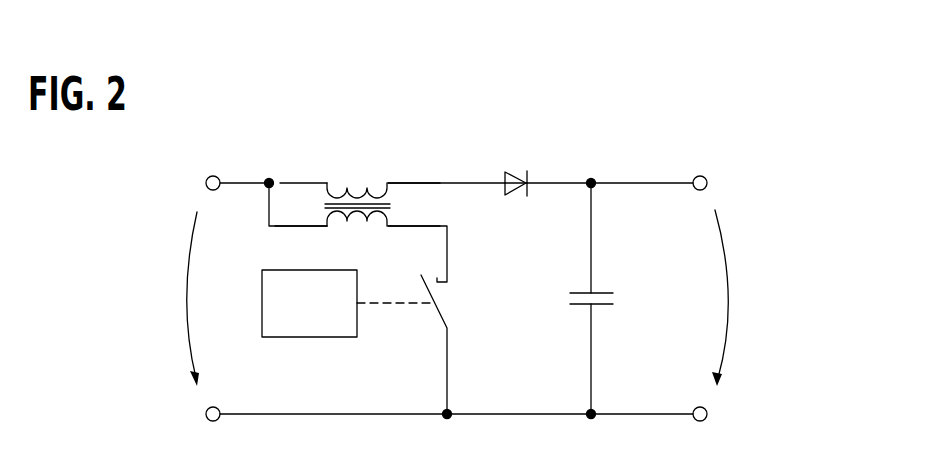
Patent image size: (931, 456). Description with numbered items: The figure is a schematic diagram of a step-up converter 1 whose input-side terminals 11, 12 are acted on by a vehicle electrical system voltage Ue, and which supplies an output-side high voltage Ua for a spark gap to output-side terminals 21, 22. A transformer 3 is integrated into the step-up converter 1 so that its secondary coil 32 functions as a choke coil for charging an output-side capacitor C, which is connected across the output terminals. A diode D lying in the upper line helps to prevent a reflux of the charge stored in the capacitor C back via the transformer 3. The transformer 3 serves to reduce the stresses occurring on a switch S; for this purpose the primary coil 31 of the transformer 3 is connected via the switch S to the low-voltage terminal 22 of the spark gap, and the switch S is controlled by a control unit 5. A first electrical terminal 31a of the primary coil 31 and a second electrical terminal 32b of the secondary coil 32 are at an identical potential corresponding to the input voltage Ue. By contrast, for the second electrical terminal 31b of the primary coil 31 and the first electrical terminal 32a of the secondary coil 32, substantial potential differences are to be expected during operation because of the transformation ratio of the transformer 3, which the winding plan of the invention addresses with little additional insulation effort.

The step-up converter 1 is at (672, 68).
The transformer 3 is at (380, 148).
The control unit 5 is at (310, 316).
The input-side terminal 11 is at (206, 183).
The input-side terminal 12 is at (206, 414).
The output-side terminal 21 is at (707, 183).
The output-side terminal 22 is at (707, 414).
The primary coil 31 is at (365, 218).
The first electrical terminal of primary coil 31a is at (313, 227).
The second electrical terminal of primary coil 31b is at (405, 227).
The secondary coil 32 is at (350, 194).
The first electrical terminal of secondary coil 32a is at (412, 183).
The second electrical terminal of secondary coil 32b is at (308, 183).
The diode D is at (513, 192).
The switch S is at (440, 313).
The capacitor C is at (613, 300).
The vehicle electrical system voltage Ue is at (187, 292).
The output-side high voltage Ua is at (728, 290).